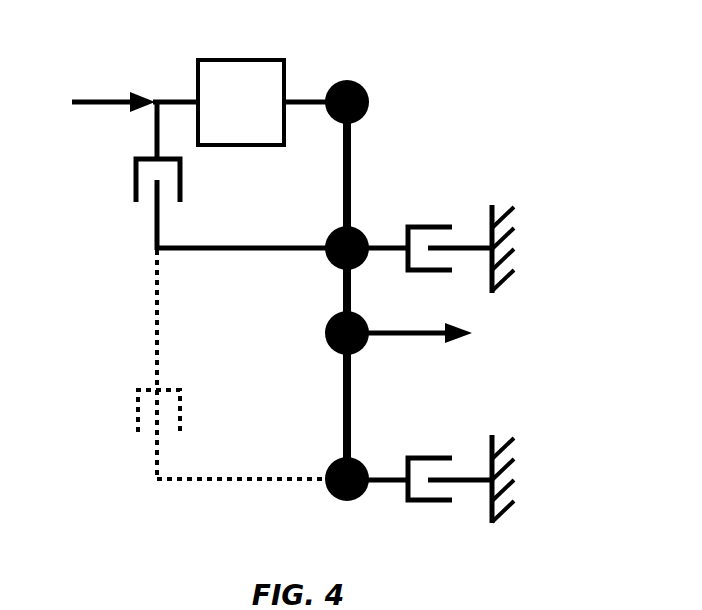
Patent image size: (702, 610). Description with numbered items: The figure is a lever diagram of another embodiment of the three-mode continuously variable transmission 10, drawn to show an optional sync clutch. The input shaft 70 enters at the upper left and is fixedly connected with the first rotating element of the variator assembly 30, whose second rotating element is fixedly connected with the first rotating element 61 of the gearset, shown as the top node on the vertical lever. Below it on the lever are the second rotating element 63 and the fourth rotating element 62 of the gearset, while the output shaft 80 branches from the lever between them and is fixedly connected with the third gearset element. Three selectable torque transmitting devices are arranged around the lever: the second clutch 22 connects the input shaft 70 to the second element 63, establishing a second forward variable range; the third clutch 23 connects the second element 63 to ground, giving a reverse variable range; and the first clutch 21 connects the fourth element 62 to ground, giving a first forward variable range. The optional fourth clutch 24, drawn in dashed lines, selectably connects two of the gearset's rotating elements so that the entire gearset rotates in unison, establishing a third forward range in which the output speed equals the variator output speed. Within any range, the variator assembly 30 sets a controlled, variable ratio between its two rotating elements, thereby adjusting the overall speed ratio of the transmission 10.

The continuously variable transmission 10 is at (546, 54).
The input shaft 70 is at (100, 100).
The variator assembly 30 is at (247, 60).
The first rotating element of the gearset 61 is at (353, 80).
The second rotating element of the gearset 63 is at (332, 232).
The fourth rotating element of the gearset 62 is at (340, 502).
The second clutch 22 is at (136, 180).
The fourth clutch 24 is at (138, 412).
The third clutch 23 is at (440, 227).
The first clutch 21 is at (438, 458).
The output shaft 80 is at (448, 342).